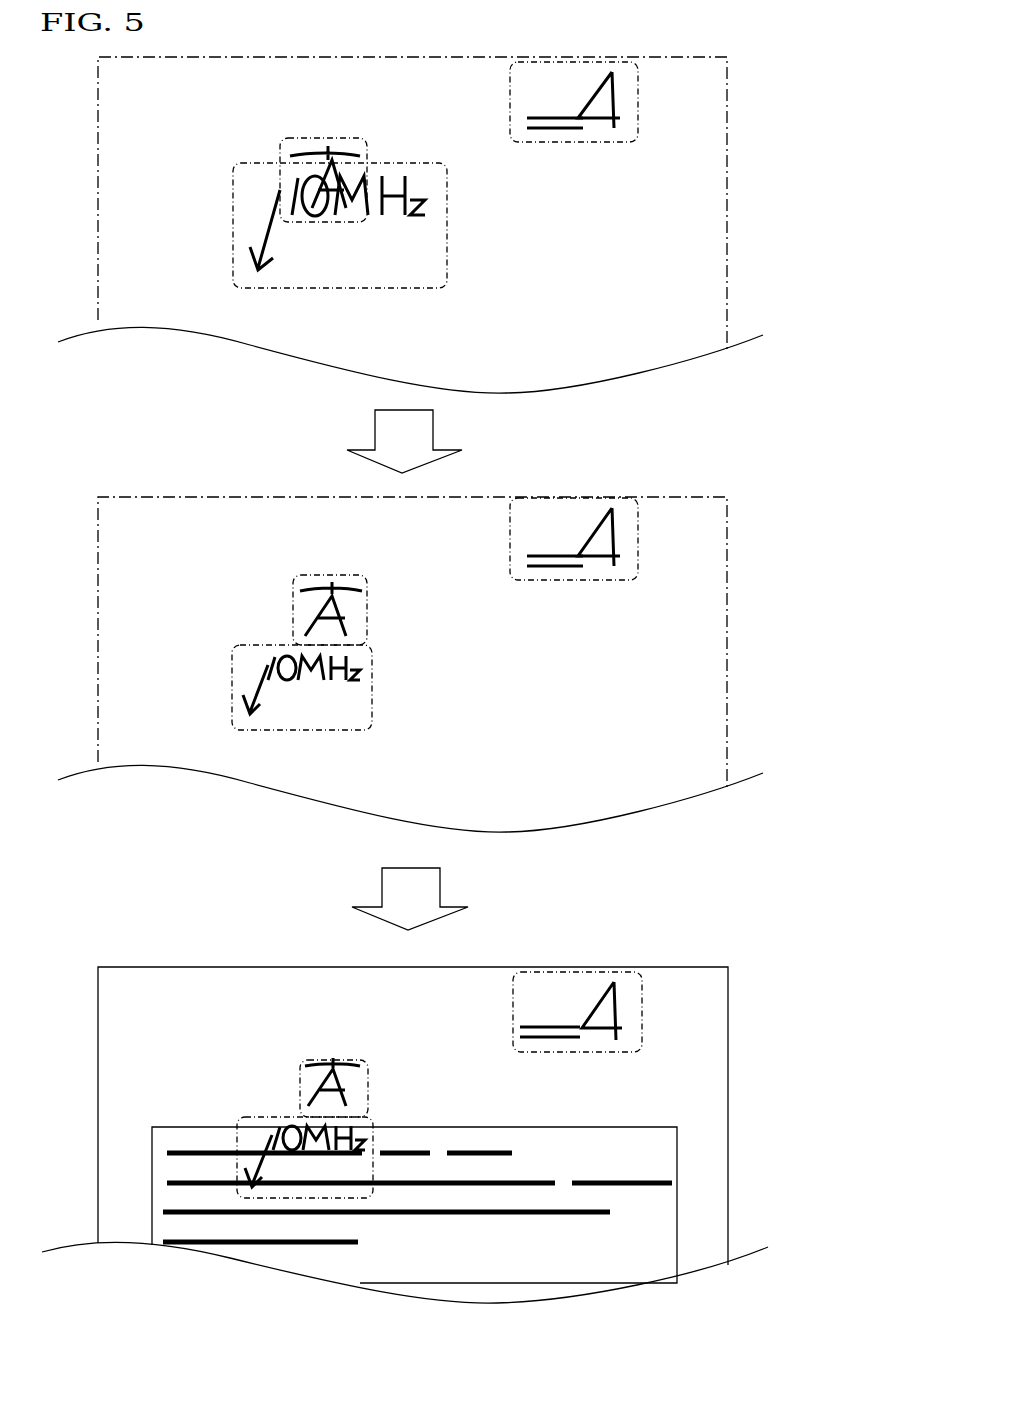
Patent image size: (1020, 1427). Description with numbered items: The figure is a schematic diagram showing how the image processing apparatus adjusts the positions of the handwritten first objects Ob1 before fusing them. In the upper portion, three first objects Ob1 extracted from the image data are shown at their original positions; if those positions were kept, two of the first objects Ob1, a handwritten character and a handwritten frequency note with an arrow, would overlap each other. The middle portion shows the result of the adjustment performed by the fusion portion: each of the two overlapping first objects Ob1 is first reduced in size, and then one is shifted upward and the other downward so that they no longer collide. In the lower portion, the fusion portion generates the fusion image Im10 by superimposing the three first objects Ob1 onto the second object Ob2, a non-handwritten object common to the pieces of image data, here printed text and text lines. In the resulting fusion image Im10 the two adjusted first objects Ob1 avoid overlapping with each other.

The first object Ob1 is at (533, 175).
The second object Ob2 is at (403, 1010).
The fusion image Im10 is at (560, 954).